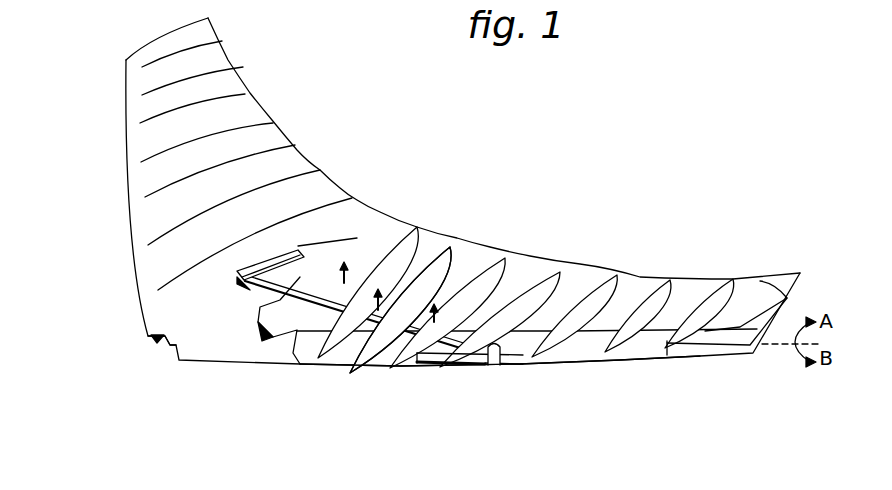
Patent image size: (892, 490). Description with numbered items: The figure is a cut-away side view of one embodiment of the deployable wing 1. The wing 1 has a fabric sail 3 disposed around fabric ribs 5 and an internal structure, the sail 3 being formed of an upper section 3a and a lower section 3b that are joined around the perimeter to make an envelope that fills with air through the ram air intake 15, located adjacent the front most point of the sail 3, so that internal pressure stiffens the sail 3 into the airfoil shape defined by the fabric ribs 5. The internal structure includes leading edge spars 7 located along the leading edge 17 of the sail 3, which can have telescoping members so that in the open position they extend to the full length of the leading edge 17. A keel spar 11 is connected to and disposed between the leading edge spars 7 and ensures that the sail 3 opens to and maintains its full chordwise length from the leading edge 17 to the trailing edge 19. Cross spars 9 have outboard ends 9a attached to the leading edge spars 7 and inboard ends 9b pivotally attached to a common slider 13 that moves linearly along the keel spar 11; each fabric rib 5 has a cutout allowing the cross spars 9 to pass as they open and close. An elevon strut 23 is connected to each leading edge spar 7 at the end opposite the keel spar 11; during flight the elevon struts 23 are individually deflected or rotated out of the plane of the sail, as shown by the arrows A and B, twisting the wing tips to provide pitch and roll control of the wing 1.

The wing 1 is at (428, 175).
The fabric sail 3 is at (120, 258).
The upper section 3a is at (253, 140).
The lower section 3b is at (517, 277).
The fabric ribs 5 is at (450, 260).
The leading edge spars 7 is at (437, 364).
The cross spars 9 is at (367, 322).
The outboard ends 9a is at (500, 346).
The inboard ends 9b is at (368, 289).
The keel spar 11 is at (290, 253).
The common slider 13 is at (263, 260).
The ram air intake 15 is at (160, 347).
The leading edge 17 is at (628, 358).
The trailing edge 19 is at (590, 263).
The elevon struts 23 is at (790, 297).